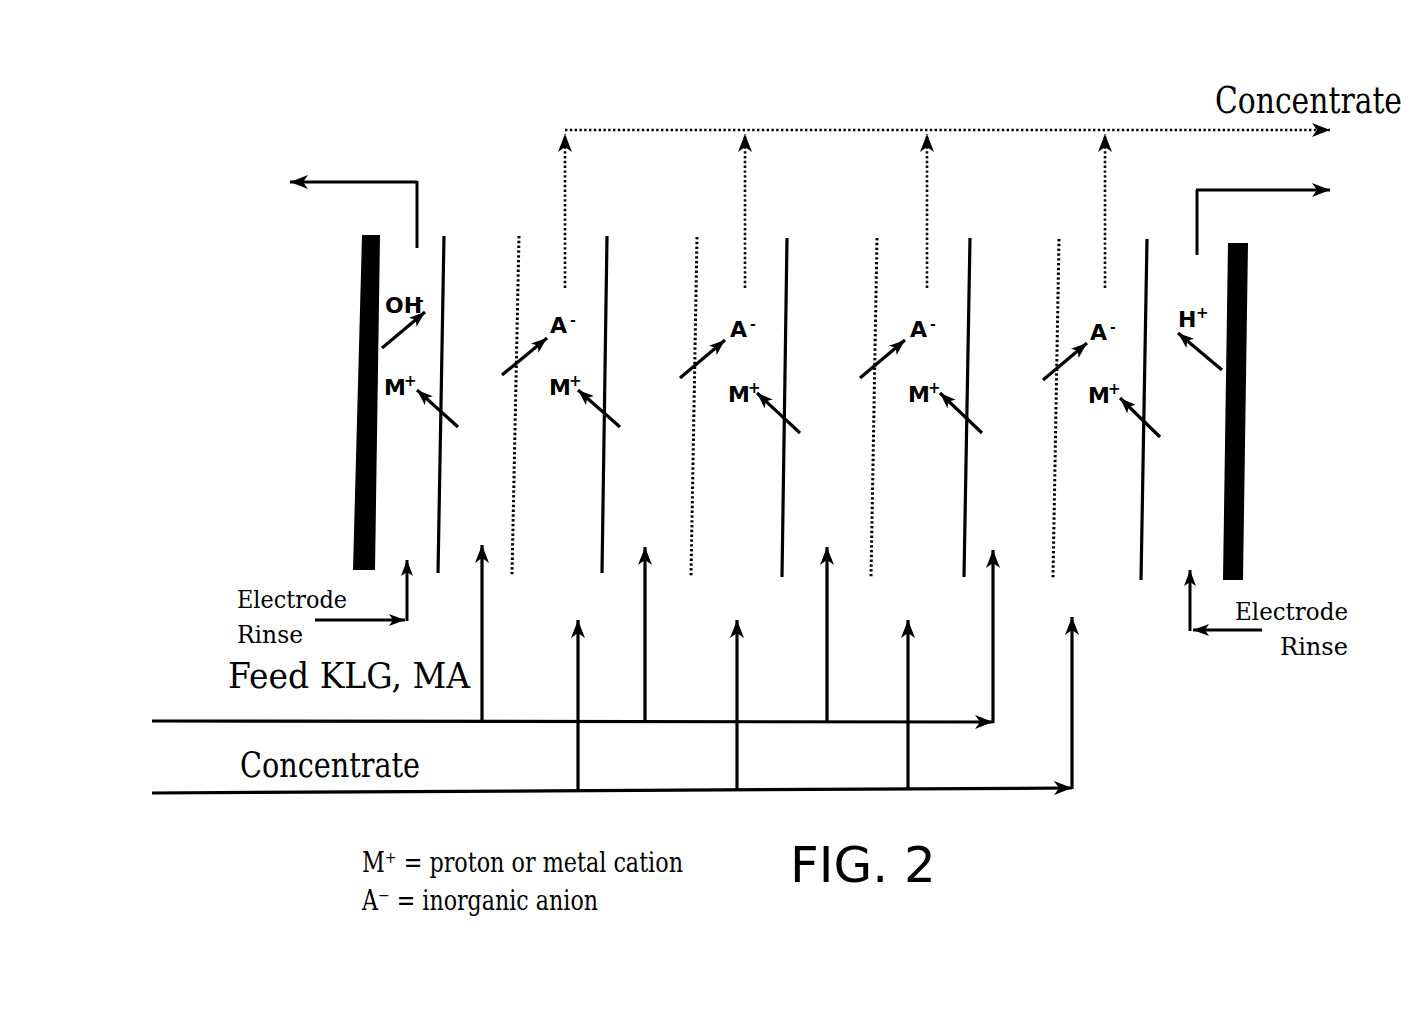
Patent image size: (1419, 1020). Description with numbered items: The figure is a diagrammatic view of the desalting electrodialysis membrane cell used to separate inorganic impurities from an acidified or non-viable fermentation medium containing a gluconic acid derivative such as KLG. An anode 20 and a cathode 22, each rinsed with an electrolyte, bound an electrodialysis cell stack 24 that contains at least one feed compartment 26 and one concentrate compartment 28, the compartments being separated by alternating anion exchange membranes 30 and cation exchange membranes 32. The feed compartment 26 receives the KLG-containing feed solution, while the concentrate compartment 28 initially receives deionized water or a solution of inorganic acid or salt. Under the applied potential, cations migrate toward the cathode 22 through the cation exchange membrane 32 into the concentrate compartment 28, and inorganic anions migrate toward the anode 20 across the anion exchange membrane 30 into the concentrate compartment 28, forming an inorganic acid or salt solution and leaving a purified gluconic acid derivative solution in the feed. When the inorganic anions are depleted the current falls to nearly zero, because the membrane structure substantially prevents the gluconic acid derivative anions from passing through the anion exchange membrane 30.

The anode 20 is at (1253, 348).
The cathode 22 is at (358, 335).
The electrodialysis cell stack 24 is at (506, 177).
The feed compartment 26 is at (656, 606).
The concentrate compartment 28 is at (745, 641).
The anion exchange membrane 30 is at (693, 347).
The cation exchange membrane 32 is at (792, 347).